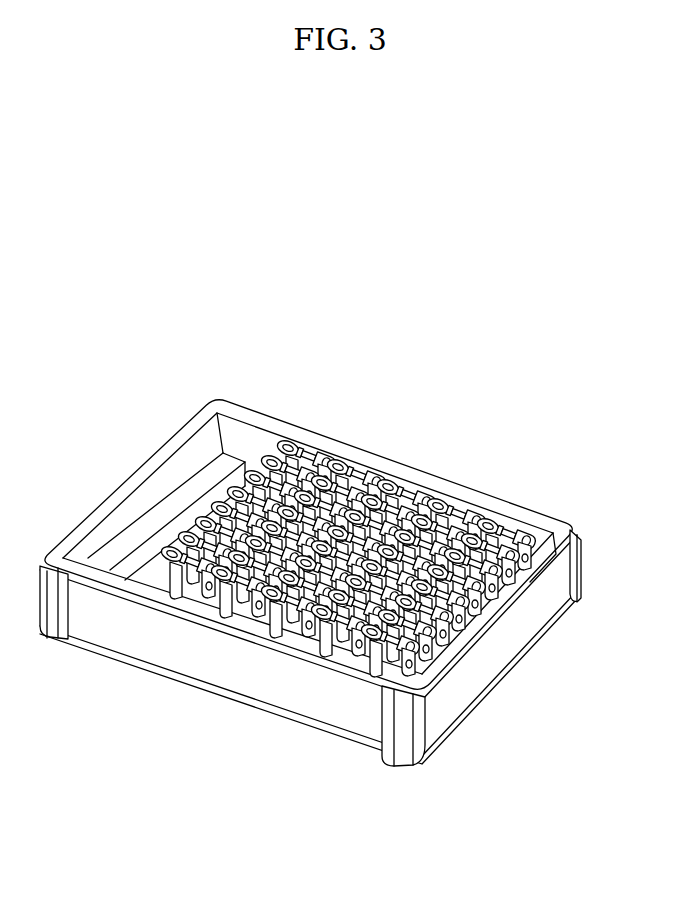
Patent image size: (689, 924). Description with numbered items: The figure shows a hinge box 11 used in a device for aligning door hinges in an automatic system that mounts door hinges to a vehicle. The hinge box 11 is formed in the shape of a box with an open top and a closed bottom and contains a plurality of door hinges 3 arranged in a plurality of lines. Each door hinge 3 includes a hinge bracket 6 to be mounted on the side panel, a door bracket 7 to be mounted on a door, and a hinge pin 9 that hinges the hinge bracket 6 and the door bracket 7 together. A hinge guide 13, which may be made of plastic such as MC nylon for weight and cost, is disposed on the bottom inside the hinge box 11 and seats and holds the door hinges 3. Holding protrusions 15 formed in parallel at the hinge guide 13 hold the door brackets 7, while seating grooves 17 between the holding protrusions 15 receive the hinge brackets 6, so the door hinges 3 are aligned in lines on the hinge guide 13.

The door hinge 3 is at (309, 601).
The hinge bracket 6 is at (199, 606).
The door bracket 7 is at (176, 558).
The hinge pin 9 is at (206, 592).
The hinge box 11 is at (413, 452).
The hinge guide 13 is at (246, 452).
The holding protrusion 15 is at (200, 489).
The seating groove 17 is at (145, 570).